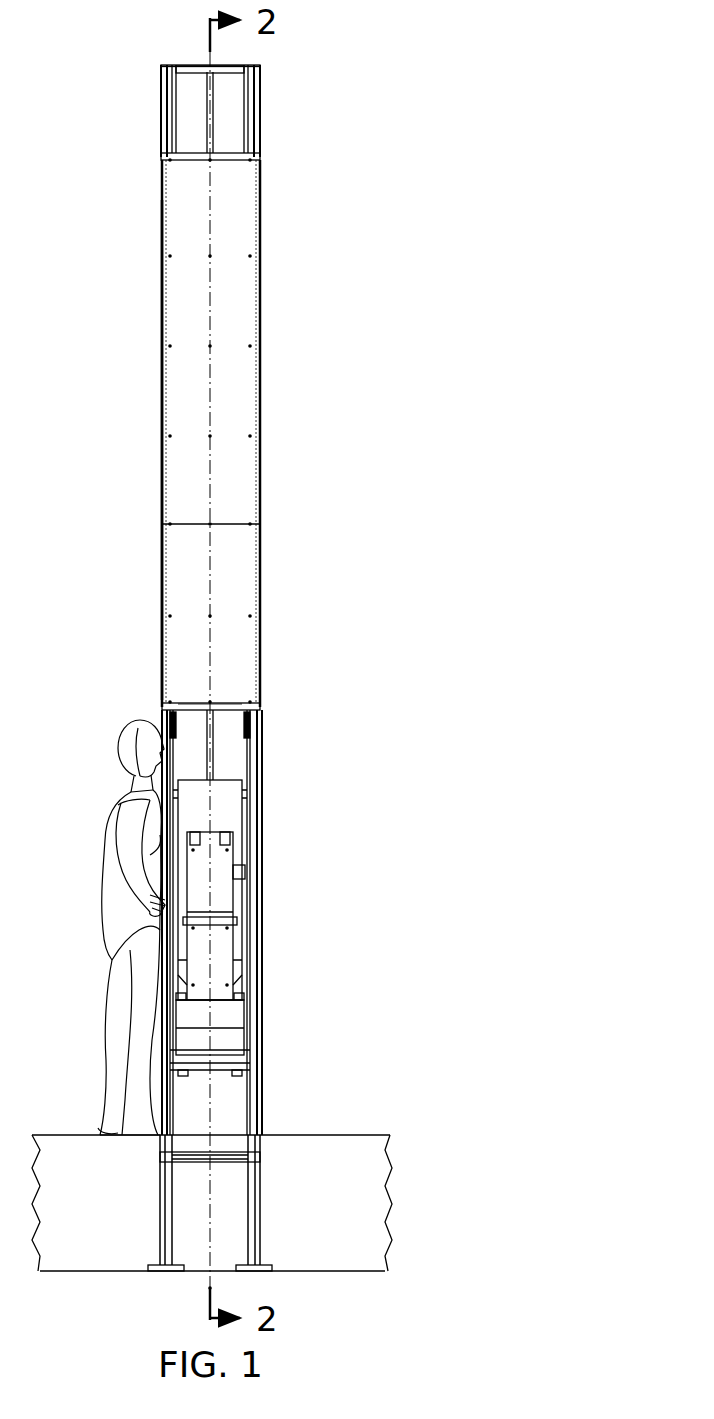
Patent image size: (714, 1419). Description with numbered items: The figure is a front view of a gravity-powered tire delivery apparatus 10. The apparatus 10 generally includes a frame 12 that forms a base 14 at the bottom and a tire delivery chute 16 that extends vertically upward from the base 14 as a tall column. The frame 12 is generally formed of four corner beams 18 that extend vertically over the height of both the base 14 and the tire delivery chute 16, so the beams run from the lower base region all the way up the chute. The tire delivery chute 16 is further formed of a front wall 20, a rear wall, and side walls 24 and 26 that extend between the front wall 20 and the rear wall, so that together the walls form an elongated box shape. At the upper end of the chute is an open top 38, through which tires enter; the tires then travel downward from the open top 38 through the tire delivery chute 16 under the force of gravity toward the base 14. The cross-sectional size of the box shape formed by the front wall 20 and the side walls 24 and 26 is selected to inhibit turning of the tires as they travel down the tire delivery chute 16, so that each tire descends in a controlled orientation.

The gravity-powered tire delivery apparatus 10 is at (344, 189).
The open top 38 is at (165, 30).
The tire delivery chute 16 is at (280, 535).
The front wall 20 is at (240, 318).
The side wall 24 is at (161, 358).
The side wall 26 is at (262, 598).
The frame 12 is at (280, 728).
The base 14 is at (282, 1123).
The corner beams 18 is at (260, 1223).